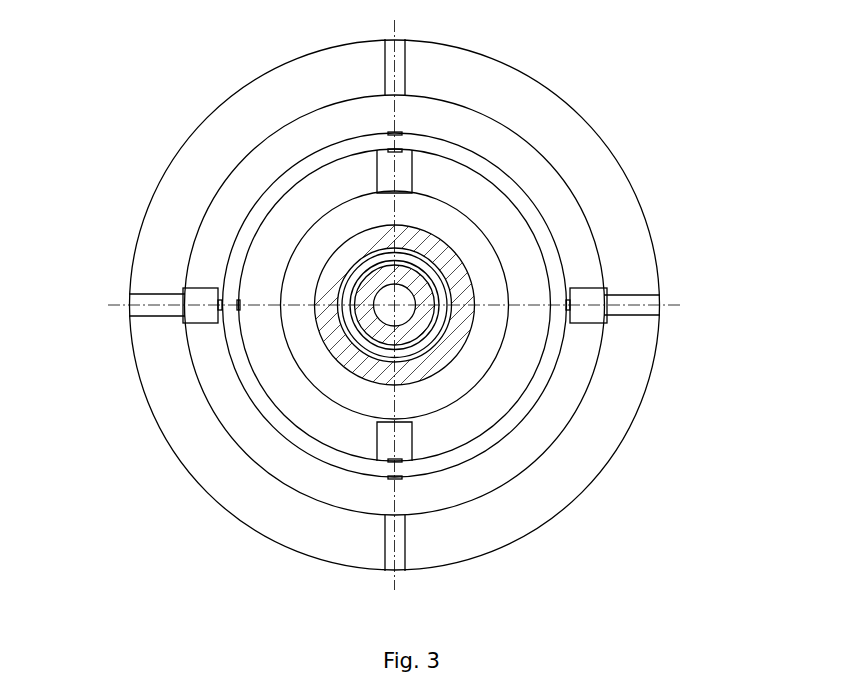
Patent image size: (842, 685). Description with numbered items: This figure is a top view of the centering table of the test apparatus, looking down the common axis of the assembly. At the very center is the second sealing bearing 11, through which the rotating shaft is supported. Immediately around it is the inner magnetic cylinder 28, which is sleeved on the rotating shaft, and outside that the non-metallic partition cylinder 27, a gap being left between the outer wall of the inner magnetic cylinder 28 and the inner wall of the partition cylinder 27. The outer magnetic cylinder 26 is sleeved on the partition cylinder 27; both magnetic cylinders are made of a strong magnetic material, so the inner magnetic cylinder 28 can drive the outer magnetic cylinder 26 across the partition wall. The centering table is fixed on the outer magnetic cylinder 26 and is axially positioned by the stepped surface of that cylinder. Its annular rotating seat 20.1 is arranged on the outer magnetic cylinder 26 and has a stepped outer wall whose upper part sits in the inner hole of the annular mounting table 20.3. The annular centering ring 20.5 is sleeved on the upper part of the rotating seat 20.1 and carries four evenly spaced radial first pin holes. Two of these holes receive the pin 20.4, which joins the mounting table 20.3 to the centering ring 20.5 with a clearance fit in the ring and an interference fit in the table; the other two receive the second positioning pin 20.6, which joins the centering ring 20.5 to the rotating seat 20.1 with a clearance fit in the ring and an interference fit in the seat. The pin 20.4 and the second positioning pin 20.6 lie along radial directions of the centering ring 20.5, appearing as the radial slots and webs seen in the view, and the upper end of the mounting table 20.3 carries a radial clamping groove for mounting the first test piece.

The second sealing bearing 11 is at (395, 303).
The outer magnetic cylinder 26 is at (325, 283).
The partition cylinder 27 is at (336, 306).
The inner magnetic cylinder 28 is at (372, 342).
The rotating seat 20.1 is at (472, 245).
The mounting table 20.3 is at (622, 262).
The pin 20.4 is at (553, 306).
The centering ring 20.5 is at (545, 373).
The second positioning pin 20.6 is at (402, 480).